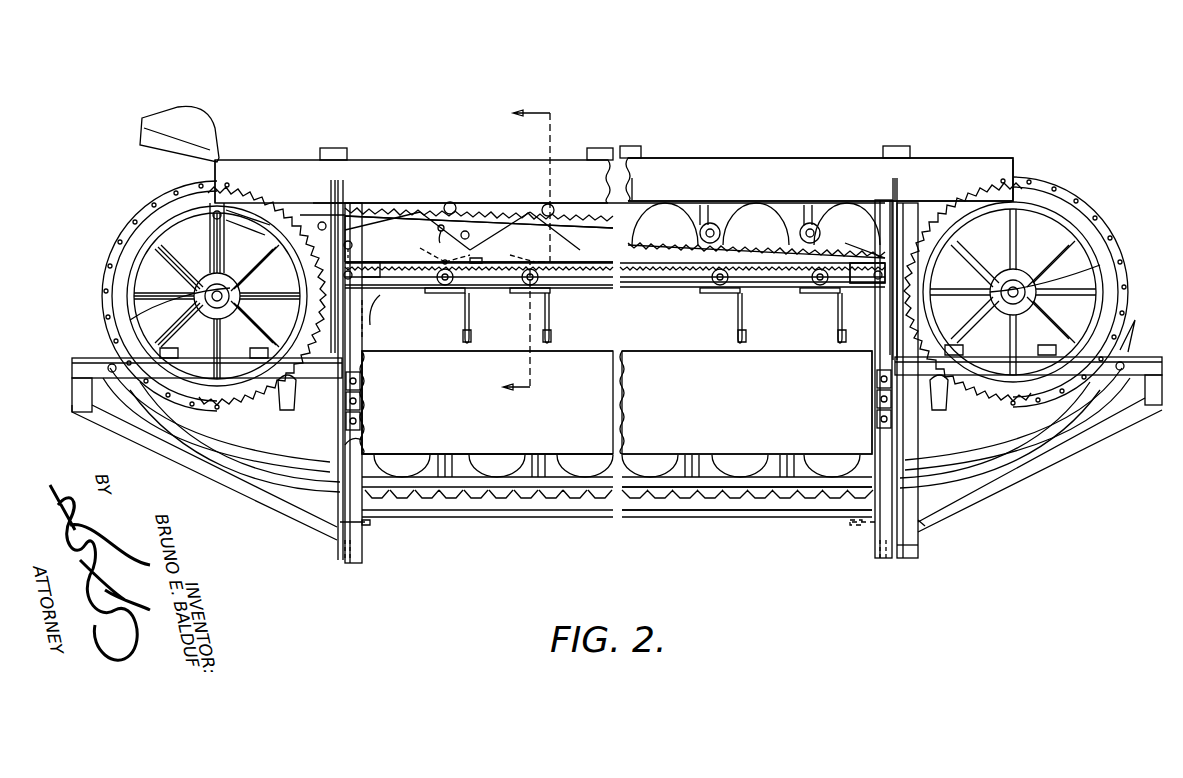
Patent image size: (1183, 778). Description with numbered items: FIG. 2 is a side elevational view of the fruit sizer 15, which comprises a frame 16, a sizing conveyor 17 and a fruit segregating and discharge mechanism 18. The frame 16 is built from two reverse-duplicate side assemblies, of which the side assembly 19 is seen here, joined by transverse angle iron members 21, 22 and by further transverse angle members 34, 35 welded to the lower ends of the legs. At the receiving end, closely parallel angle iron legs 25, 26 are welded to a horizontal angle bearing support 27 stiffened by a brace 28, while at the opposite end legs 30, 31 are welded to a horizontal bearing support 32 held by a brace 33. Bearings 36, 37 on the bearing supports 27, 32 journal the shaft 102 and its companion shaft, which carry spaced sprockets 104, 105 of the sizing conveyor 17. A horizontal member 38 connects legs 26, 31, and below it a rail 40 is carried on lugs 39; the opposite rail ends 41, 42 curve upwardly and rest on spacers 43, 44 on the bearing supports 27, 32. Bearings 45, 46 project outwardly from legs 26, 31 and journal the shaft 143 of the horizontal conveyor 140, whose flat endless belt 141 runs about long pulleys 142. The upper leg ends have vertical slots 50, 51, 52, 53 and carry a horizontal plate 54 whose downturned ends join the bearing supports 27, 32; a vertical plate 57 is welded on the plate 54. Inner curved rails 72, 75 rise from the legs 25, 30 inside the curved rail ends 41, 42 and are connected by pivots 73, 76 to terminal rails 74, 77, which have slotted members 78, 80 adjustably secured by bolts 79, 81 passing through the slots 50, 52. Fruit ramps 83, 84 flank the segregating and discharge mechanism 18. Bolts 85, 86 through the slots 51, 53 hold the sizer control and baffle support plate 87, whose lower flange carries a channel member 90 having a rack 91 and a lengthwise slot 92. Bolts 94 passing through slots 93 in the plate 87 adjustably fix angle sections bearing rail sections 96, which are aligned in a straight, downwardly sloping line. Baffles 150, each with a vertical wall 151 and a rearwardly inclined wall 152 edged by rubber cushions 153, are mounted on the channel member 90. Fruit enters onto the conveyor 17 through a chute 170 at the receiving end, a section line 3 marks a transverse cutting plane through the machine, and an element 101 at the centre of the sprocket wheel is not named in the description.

The sizer 15 is at (1007, 62).
The frame 16 is at (920, 552).
The sizing conveyor 17 is at (1075, 180).
The fruit segregating and discharge mechanism 18 is at (690, 440).
The side assembly 19 is at (920, 522).
The transverse angle iron member 21 is at (292, 392).
The transverse angle iron member 22 is at (948, 386).
The angle iron leg 25 is at (344, 560).
The angle iron leg 26 is at (350, 562).
The horizontal angle bearing support 27 is at (90, 360).
The brace 28 is at (118, 428).
The angle iron leg 30 is at (910, 565).
The angle iron leg 31 is at (886, 565).
The horizontal bearing support 32 is at (1152, 356).
The brace 33 is at (1112, 430).
The transverse angle member 34 is at (362, 546).
The transverse angle member 35 is at (878, 545).
The bearing 36 is at (243, 300).
The bearing 37 is at (1042, 334).
The horizontal member 38 is at (783, 485).
The lugs 39 is at (367, 522).
The rail 40 is at (660, 512).
The rail end 41 is at (200, 488).
The rail end 42 is at (1040, 478).
The spacer 43 is at (112, 373).
The spacer 44 is at (1122, 370).
The bearing 45 is at (362, 386).
The bearing 46 is at (877, 403).
The vertical slot 50 is at (331, 195).
The vertical slot 51 is at (362, 308).
The vertical slot 52 is at (900, 215).
The vertical slot 53 is at (880, 205).
The horizontal plate 54 is at (742, 203).
The vertical plate 57 is at (712, 162).
The inner curved rail 72 is at (232, 440).
The pivot 73 is at (226, 206).
The terminal rail 74 is at (246, 216).
The inner curved rail 75 is at (976, 446).
The pivot 76 is at (1016, 180).
The terminal rail 77 is at (960, 233).
The slotted member 78 is at (305, 216).
The bolt 79 is at (320, 222).
The slotted member 80 is at (925, 292).
The bolt 81 is at (890, 292).
The fruit ramp 83 is at (270, 290).
The fruit ramp 84 is at (965, 292).
The bolt 85 is at (352, 272).
The bolt 86 is at (876, 280).
The sizer control and baffle support plate 87 is at (479, 239).
The channel member 90 is at (385, 300).
The rack 91 is at (480, 262).
The slot 92 is at (471, 302).
The slots 93 is at (452, 255).
The bolts 94 is at (441, 240).
The rail section 96 is at (500, 214).
The hub 101 is at (1020, 288).
The shaft 102 is at (208, 298).
The sprockets 104 is at (262, 304).
The sprockets 105 is at (952, 330).
The horizontal conveyor 140 is at (482, 438).
The flat endless belt 141 is at (487, 402).
The pulleys 142 is at (365, 445).
The shaft 143 is at (877, 393).
The baffles 150 is at (550, 302).
The vertical wall 151 is at (553, 336).
The inclined wall 152 is at (510, 262).
The rubber cushions 153 is at (836, 338).
The chute 170 is at (170, 130).
The section line 3- 3 is at (534, 250).